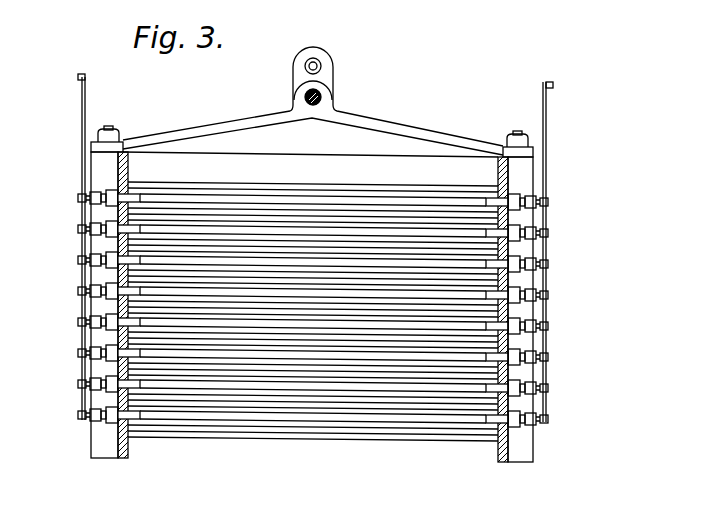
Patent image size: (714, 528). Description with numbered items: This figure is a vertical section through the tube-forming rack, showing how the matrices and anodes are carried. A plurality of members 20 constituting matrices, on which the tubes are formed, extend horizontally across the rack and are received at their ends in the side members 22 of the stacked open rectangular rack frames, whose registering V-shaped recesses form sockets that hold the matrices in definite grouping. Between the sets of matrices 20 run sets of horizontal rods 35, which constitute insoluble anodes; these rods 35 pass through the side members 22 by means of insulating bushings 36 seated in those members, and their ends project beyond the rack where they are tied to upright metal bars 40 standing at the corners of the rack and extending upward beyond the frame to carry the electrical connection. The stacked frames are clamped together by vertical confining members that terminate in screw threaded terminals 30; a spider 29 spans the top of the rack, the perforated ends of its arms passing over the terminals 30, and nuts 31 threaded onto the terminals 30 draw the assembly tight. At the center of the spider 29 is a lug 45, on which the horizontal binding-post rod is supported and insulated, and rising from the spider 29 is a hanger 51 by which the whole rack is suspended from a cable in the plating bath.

The members constituting matrices 20 is at (263, 215).
The side members 22 is at (497, 442).
The spider 29 is at (368, 121).
The screw threaded terminals 30 is at (107, 129).
The nuts 31 is at (122, 141).
The rods 35 is at (340, 232).
The insulating bushings 36 is at (493, 418).
The upright metal bars 40 is at (82, 113).
The lug 45 is at (326, 94).
The hanger 51 is at (327, 49).